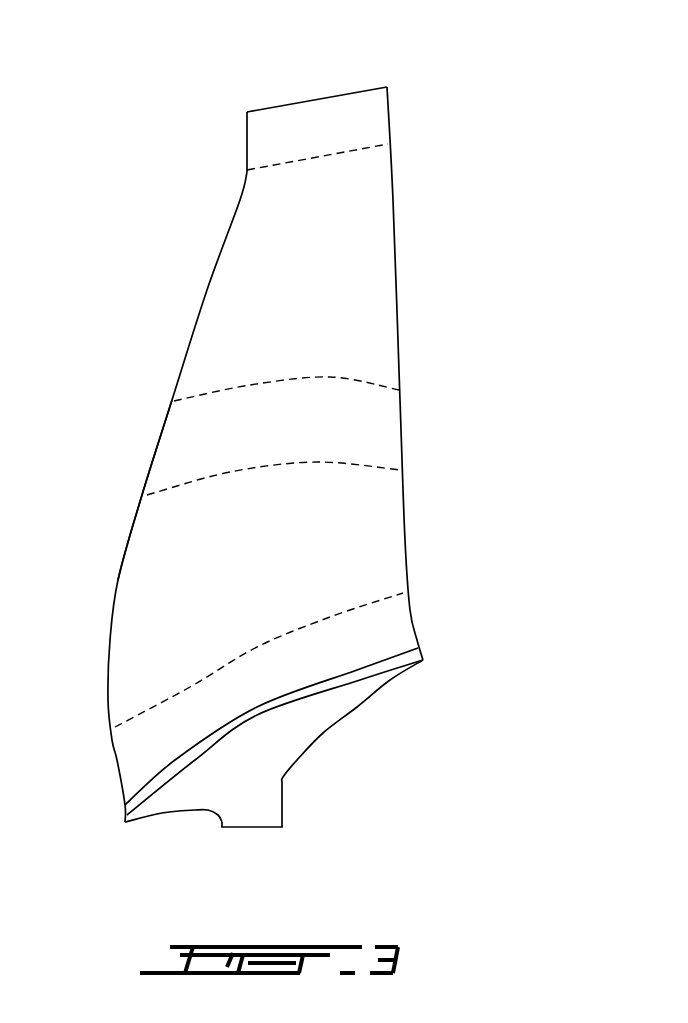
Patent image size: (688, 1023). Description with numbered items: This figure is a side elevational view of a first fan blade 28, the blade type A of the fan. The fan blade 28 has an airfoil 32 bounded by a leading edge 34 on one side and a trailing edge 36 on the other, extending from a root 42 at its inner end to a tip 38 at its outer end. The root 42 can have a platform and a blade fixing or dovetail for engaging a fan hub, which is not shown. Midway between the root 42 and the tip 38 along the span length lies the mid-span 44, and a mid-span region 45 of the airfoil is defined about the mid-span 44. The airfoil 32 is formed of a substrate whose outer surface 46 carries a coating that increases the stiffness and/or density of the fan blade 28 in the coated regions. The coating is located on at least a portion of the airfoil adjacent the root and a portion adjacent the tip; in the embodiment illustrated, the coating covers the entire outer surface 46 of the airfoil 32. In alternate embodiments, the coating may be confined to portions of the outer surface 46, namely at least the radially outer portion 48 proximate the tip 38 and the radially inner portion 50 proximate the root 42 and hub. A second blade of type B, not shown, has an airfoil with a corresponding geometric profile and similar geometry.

The fan blade 28 is at (193, 176).
The airfoil 32 is at (312, 316).
The leading edge 34 is at (205, 290).
The trailing edge 36 is at (403, 532).
The tip 38 is at (370, 85).
The root 42 is at (267, 762).
The mid-span 44 is at (153, 445).
The mid-span region 45 is at (275, 445).
The outer surface 46 is at (337, 232).
The radially outer portion 48 is at (320, 144).
The radially inner portion 50 is at (260, 693).